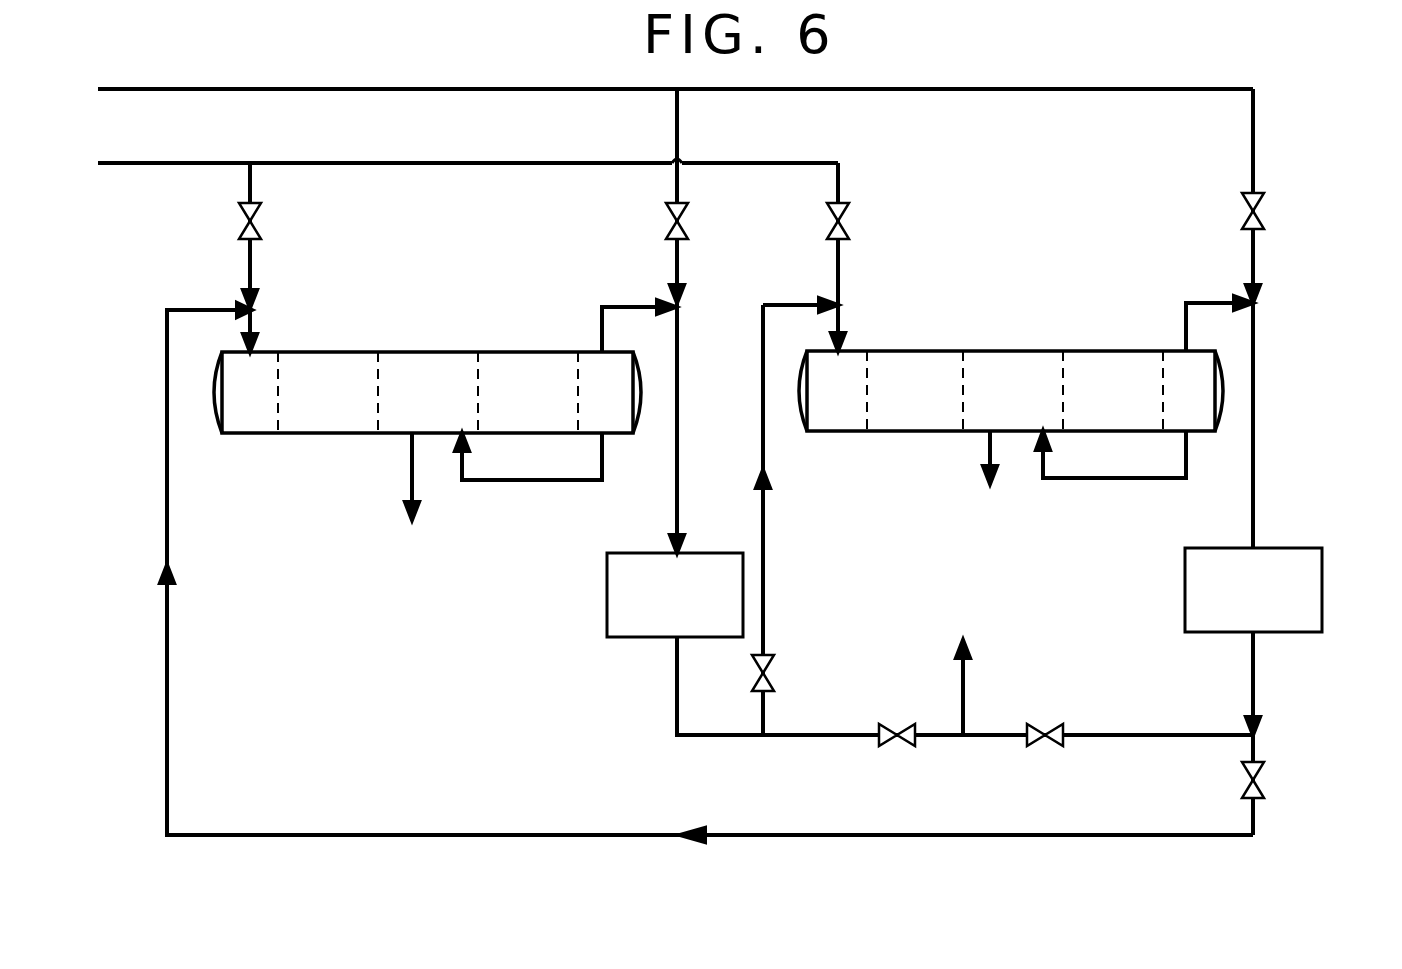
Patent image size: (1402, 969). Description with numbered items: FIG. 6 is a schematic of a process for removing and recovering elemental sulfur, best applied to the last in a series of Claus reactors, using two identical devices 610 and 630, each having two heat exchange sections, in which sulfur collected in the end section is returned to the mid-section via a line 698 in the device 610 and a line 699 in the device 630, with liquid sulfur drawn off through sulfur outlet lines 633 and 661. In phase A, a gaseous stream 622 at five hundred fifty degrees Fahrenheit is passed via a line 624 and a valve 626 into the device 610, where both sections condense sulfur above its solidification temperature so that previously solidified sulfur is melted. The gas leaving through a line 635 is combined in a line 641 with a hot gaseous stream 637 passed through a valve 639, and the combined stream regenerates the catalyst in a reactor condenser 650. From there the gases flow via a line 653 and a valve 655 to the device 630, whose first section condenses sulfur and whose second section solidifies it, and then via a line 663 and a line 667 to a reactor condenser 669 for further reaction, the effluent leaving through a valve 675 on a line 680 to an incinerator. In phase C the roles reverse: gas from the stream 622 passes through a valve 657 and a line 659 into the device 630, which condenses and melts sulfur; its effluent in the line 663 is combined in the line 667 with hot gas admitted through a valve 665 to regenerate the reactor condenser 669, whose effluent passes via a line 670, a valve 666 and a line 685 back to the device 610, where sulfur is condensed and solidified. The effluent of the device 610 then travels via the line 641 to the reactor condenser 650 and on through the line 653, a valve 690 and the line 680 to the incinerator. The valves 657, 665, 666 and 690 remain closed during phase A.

The device 610 is at (240, 435).
The gaseous stream 622 is at (163, 163).
The line 624 is at (253, 175).
The valve 626 is at (258, 225).
The device 630 is at (834, 425).
The sulfur outlet line 633 is at (414, 472).
The line 635 is at (633, 307).
The gaseous stream 637 is at (375, 89).
The valve 639 is at (680, 225).
The line 641 is at (675, 476).
The reactor condenser 650 is at (607, 598).
The line 653 is at (677, 686).
The valve 655 is at (768, 677).
The valve 657 is at (842, 224).
The line 659 is at (841, 315).
The sulfur outlet line 661 is at (988, 456).
The line 663 is at (1202, 303).
The valve 665 is at (1258, 213).
The valve 666 is at (1262, 780).
The line 667 is at (1256, 456).
The reactor condenser 669 is at (1312, 578).
The line 670 is at (1256, 665).
The valve 675 is at (1046, 745).
The line 680 is at (966, 690).
The line 685 is at (990, 835).
The valve 690 is at (900, 745).
The line 698 is at (510, 481).
The line 699 is at (1111, 478).